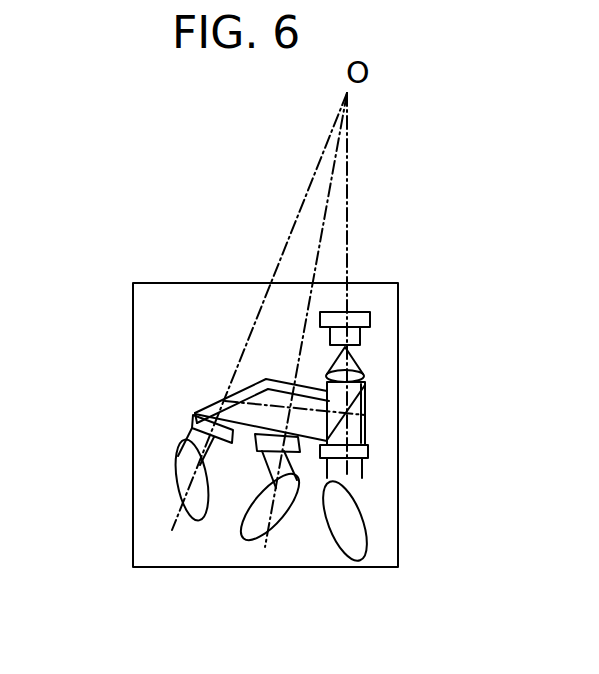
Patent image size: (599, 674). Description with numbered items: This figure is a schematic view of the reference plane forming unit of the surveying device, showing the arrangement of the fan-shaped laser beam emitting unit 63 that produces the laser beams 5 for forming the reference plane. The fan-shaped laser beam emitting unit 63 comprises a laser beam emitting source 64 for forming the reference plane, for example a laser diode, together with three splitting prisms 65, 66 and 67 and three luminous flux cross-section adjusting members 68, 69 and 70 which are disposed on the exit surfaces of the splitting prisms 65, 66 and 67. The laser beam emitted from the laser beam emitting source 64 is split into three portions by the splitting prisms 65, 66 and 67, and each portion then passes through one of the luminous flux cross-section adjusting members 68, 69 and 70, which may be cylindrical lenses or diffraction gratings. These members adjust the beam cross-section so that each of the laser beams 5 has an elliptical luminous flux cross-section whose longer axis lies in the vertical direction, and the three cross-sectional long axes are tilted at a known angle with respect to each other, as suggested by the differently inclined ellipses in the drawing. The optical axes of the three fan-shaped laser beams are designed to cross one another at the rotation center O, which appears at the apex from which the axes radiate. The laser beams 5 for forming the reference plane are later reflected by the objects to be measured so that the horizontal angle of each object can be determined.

The laser beams for forming reference plane 5 is at (376, 518).
The fan-shaped laser beam emitting unit 63 is at (312, 280).
The laser beam emitting source 64 is at (370, 318).
The splitting prism 65 is at (368, 432).
The splitting prism 66 is at (364, 377).
The splitting prism 67 is at (252, 382).
The luminous flux cross-section adjusting member 68 is at (368, 458).
The luminous flux cross-section adjusting member 69 is at (298, 445).
The luminous flux cross-section adjusting member 70 is at (193, 413).